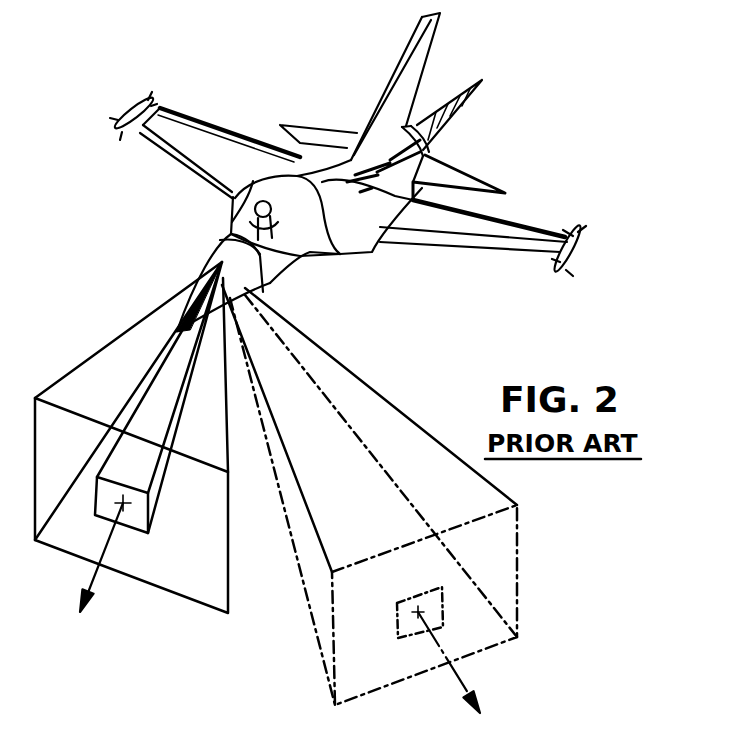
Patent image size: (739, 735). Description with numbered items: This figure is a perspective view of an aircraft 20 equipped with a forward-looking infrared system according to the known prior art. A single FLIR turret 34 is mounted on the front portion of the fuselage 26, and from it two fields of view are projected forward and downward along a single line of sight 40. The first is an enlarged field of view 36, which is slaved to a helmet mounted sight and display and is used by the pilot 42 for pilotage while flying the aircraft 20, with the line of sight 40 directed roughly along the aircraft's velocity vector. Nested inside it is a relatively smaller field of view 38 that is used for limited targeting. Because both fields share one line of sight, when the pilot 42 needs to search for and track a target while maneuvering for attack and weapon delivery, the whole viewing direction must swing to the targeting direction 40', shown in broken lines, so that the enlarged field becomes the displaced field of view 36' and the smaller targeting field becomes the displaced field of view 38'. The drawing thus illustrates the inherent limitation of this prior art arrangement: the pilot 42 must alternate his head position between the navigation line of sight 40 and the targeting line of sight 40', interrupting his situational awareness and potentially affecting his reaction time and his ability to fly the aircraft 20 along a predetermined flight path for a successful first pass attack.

The aircraft 20 is at (348, 166).
The fuselage 26 is at (315, 259).
The single FLIR turret 34 is at (218, 261).
The enlarged field of view 36 is at (160, 437).
The enlarged field of view in targeting direction 36' is at (400, 495).
The smaller field of view 38 is at (137, 397).
The smaller field of view in targeting direction 38' is at (394, 605).
The line of sight 40 is at (117, 563).
The targeting line of sight 40' is at (484, 662).
The pilot 42 is at (240, 211).